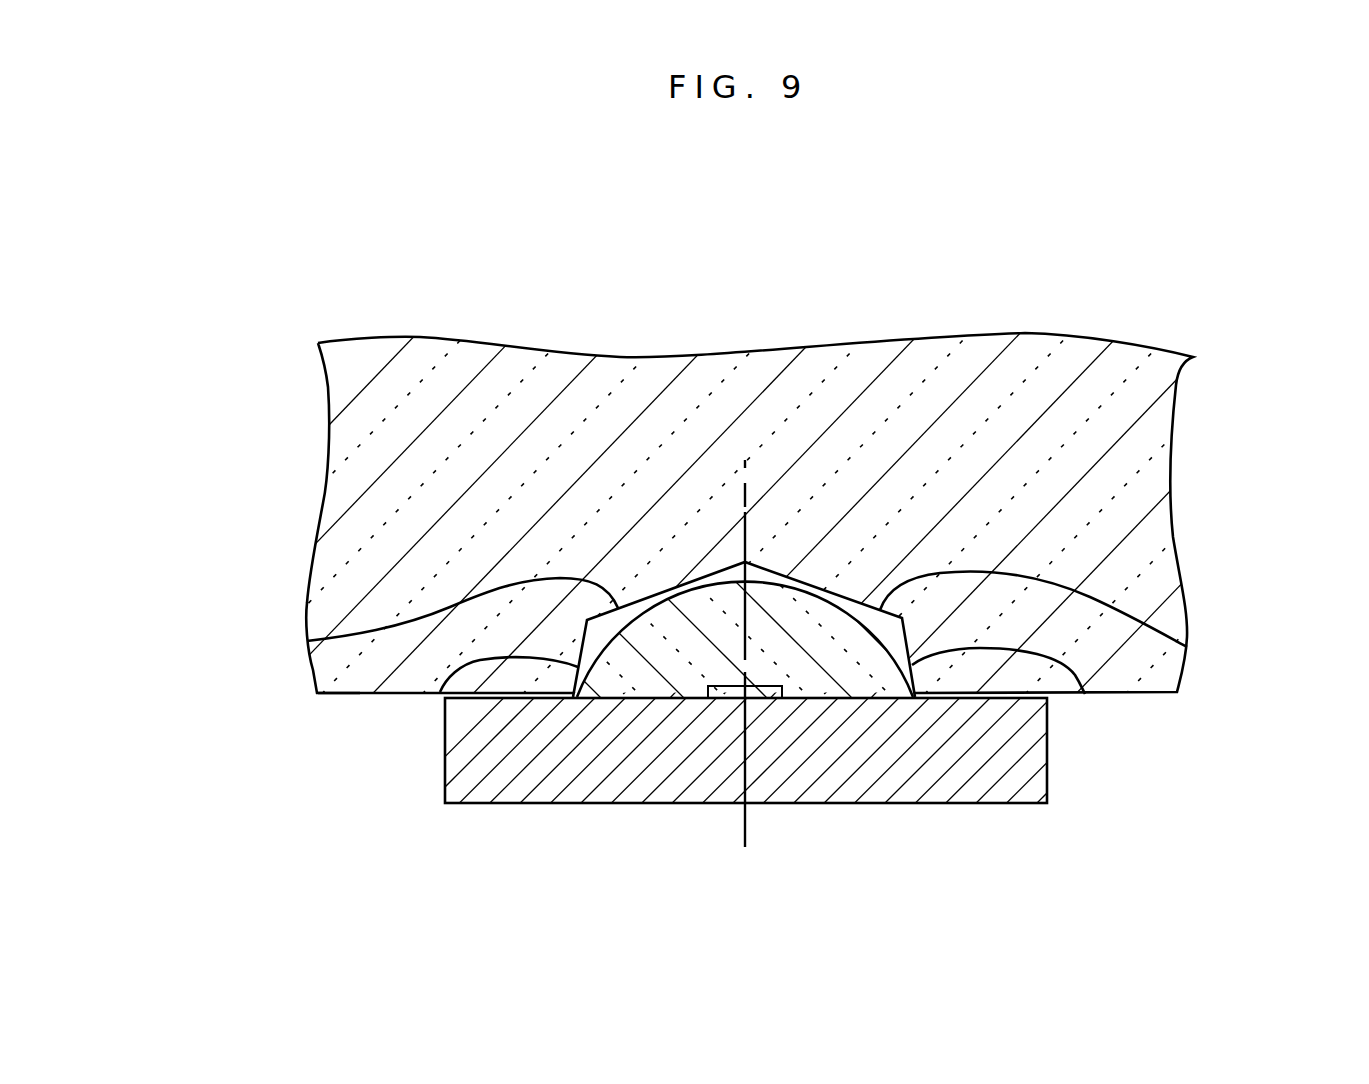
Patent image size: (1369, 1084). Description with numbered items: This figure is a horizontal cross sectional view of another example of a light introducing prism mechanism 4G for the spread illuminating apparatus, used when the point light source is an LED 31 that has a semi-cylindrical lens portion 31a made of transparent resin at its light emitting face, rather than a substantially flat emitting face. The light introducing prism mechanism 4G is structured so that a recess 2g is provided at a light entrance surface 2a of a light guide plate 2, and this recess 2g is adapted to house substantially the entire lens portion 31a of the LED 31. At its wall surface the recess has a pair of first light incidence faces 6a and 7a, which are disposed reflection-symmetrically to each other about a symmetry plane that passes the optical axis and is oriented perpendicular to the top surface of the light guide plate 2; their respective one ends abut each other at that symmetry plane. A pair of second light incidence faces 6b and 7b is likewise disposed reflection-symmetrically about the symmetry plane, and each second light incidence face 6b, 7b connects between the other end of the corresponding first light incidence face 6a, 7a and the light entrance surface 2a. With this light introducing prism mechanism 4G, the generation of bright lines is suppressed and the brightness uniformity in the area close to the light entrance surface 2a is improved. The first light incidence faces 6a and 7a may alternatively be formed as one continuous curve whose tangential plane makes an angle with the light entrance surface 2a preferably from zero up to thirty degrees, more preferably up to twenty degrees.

The light guide plate 2 is at (1136, 271).
The light entrance surface 2a is at (338, 695).
The recess 2g is at (589, 654).
The light introducing prism mechanism 4G is at (845, 578).
The first light incidence face 6a is at (307, 642).
The second light incidence face 6b is at (440, 677).
The first light incidence face 7a is at (1187, 647).
The second light incidence face 7b is at (1083, 690).
The LED 31 is at (978, 778).
The lens portion 31a is at (804, 653).